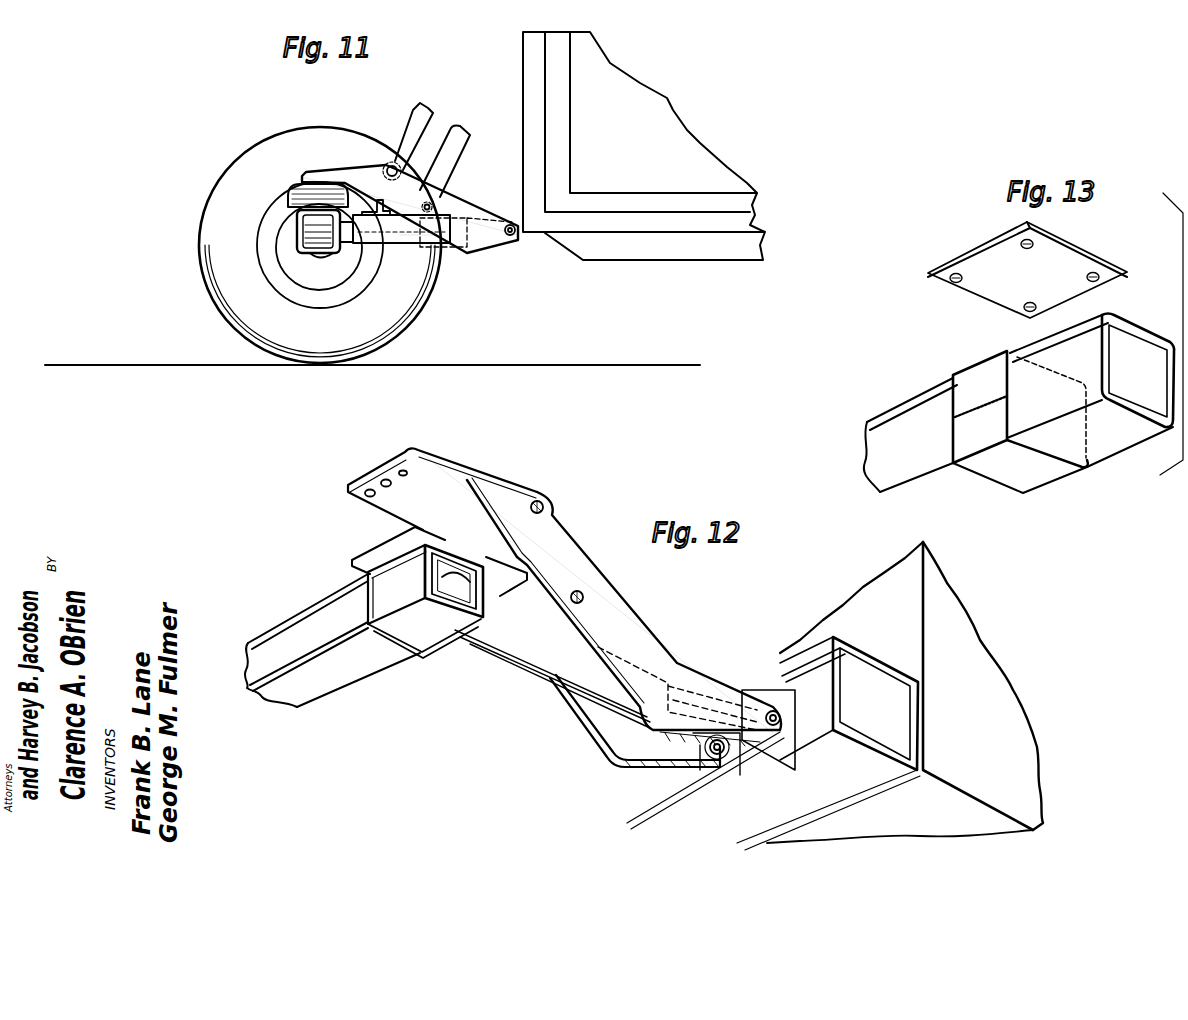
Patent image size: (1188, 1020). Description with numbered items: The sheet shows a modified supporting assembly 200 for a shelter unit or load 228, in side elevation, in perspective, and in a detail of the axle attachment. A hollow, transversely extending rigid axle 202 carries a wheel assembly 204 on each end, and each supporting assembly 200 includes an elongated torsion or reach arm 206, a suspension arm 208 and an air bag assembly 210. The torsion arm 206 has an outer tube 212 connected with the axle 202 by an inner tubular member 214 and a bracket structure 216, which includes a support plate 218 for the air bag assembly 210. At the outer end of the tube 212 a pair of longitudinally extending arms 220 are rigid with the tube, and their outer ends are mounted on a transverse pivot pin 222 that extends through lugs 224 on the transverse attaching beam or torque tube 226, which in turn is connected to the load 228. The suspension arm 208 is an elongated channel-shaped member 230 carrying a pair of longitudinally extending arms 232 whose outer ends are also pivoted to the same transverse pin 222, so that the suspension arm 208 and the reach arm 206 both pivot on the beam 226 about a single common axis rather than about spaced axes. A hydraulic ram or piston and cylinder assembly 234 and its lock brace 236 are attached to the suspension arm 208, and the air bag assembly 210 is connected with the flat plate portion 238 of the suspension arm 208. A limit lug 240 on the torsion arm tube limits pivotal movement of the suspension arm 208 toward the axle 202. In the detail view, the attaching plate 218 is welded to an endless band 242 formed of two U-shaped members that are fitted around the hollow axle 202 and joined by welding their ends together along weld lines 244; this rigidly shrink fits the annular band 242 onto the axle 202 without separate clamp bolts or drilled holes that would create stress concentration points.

In FIG. 11, the supporting assembly 200 is at (483, 263).
In FIG. 12, the supporting assembly 200 is at (690, 633).
In FIG. 12, the axle 202 is at (358, 648).
In FIG. 13, the axle 202 is at (1120, 423).
In FIG. 11, the wheel assembly 204 is at (240, 312).
In FIG. 12, the torsion arm 206 is at (505, 674).
In FIG. 12, the suspension arm 208 is at (575, 548).
In FIG. 11, the air bag assembly 210 is at (276, 190).
In FIG. 11, the outer tube 212 is at (447, 253).
In FIG. 12, the outer tube 212 is at (558, 658).
In FIG. 12, the inner tubular member 214 is at (447, 590).
In FIG. 12, the bracket structure 216 is at (387, 580).
In FIG. 12, the support plate 218 is at (367, 552).
In FIG. 13, the support plate 218 is at (942, 277).
In FIG. 12, the arms 220 is at (685, 738).
In FIG. 11, the transverse pivot pin 222 is at (512, 236).
In FIG. 12, the transverse pivot pin 222 is at (786, 726).
In FIG. 12, the lugs 224 is at (732, 757).
In FIG. 12, the transverse attaching beam 226 is at (860, 763).
In FIG. 12, the load 228 is at (945, 602).
In FIG. 11, the channel-shaped member 230 is at (448, 208).
In FIG. 12, the channel-shaped member 230 is at (610, 612).
In FIG. 12, the arms 232 is at (710, 687).
In FIG. 11, the hydraulic ram 234 is at (465, 148).
In FIG. 11, the lock brace 236 is at (415, 135).
In FIG. 12, the flat plate portion 238 is at (417, 490).
In FIG. 11, the limit lug 240 is at (372, 222).
In FIG. 13, the endless band 242 is at (967, 372).
In FIG. 13, the weld lines 244 is at (955, 414).